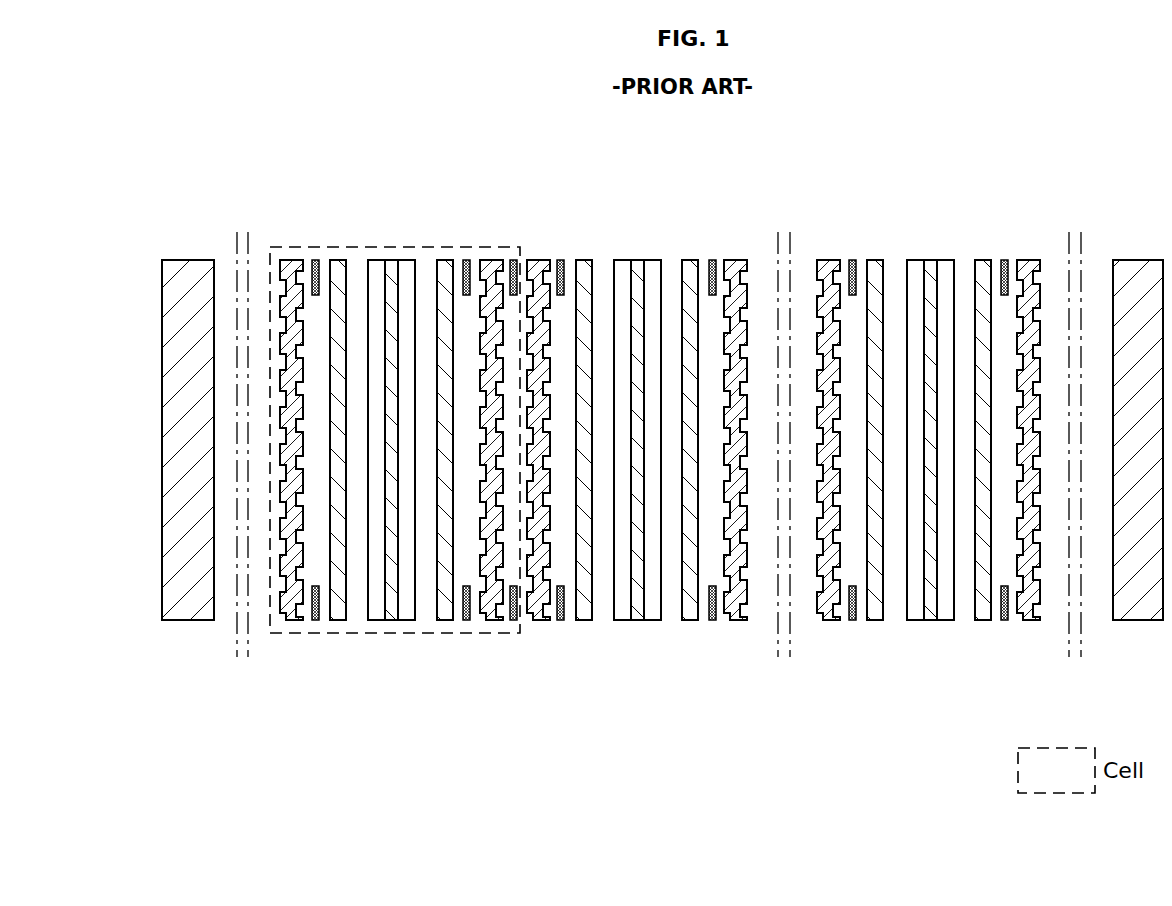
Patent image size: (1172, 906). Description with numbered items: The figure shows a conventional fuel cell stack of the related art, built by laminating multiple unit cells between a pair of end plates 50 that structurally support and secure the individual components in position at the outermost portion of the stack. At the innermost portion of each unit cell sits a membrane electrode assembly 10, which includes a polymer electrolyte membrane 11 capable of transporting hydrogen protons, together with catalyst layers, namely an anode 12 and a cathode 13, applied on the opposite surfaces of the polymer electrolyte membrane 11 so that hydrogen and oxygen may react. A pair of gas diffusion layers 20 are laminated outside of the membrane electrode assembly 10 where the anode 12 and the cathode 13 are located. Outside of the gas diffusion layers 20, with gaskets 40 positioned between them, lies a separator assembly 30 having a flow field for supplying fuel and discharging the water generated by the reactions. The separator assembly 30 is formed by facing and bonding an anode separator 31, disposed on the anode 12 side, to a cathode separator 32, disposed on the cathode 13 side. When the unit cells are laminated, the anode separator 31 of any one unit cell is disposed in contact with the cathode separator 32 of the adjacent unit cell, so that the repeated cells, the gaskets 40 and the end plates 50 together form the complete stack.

The membrane electrode assembly 10 is at (643, 518).
The polymer electrolyte membrane 11 is at (393, 607).
The anode 12 is at (407, 607).
The cathode 13 is at (380, 607).
The gas diffusion layers 20 is at (338, 607).
The separator assembly 30 is at (650, 524).
The anode separator 31 is at (290, 608).
The cathode separator 32 is at (492, 608).
The gasket 40 is at (316, 262).
The end plates 50 is at (186, 607).